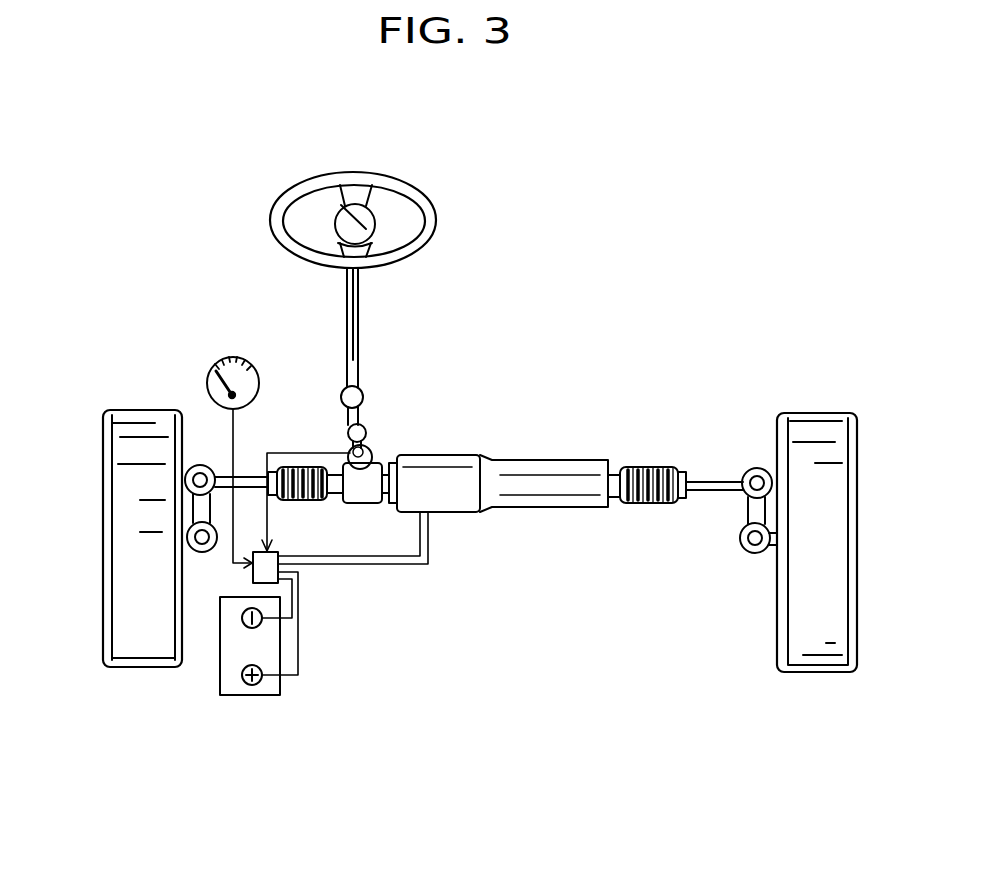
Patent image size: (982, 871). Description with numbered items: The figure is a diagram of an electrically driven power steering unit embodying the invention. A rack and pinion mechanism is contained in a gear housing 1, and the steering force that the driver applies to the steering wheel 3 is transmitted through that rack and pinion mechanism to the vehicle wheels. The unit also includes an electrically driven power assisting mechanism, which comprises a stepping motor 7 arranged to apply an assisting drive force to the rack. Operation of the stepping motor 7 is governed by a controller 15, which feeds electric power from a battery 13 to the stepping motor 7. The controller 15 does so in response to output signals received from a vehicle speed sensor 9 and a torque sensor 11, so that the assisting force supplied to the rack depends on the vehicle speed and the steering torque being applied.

The gear housing 1 is at (548, 458).
The steering wheel 3 is at (323, 174).
The stepping motor 7 is at (443, 493).
The vehicle speed sensor 9 is at (216, 362).
The torque sensor 11 is at (376, 450).
The battery 13 is at (270, 685).
The controller 15 is at (268, 578).